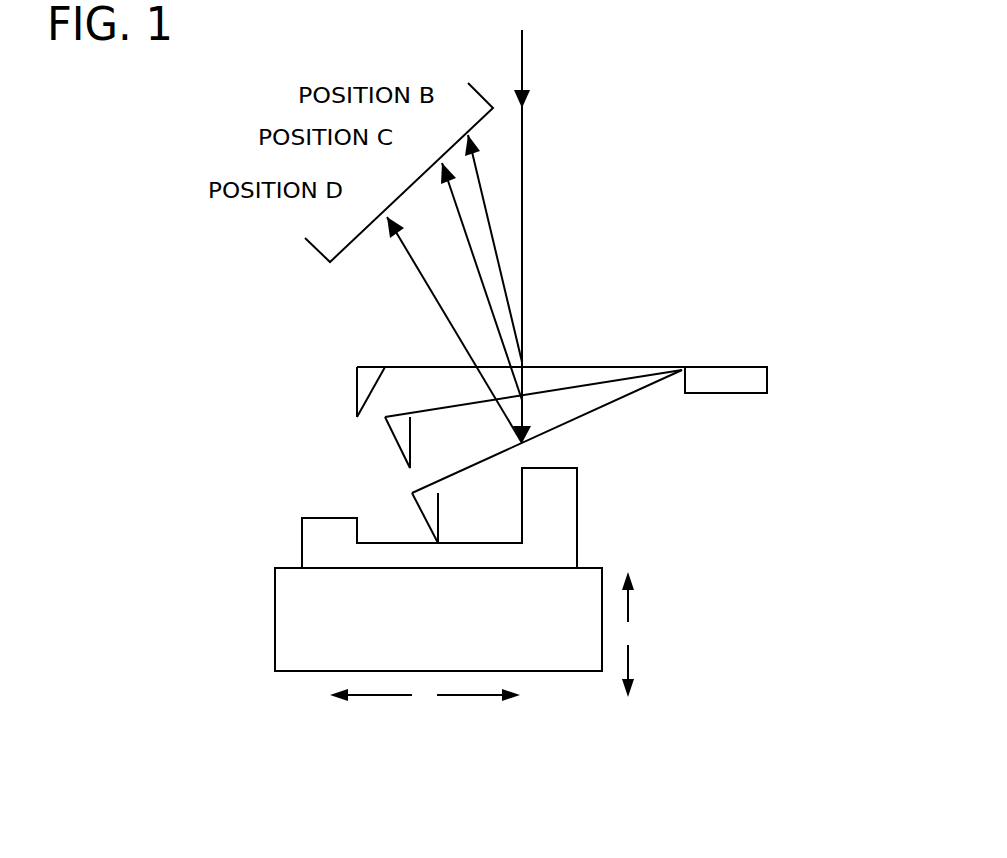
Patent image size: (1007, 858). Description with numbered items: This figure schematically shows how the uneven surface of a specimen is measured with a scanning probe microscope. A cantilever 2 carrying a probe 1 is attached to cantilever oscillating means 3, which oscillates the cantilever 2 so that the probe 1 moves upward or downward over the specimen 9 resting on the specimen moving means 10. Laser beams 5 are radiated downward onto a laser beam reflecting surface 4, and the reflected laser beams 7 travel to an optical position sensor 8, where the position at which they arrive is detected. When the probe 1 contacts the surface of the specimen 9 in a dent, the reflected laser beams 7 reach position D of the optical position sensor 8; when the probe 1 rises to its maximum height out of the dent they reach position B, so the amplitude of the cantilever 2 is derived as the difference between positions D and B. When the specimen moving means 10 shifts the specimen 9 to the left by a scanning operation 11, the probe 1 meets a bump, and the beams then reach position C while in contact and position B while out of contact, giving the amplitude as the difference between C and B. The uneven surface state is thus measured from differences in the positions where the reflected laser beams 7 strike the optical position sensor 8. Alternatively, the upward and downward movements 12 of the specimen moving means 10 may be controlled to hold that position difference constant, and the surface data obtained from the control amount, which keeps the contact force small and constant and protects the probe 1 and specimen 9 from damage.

The probe 1 is at (357, 403).
The cantilever 2 is at (347, 363).
The cantilever oscillating means 3 is at (742, 397).
The laser beam reflecting surface 4 is at (403, 360).
The laser beam 5 is at (528, 148).
The reflected laser beams 7 is at (400, 253).
The optical position sensor 8 is at (472, 87).
The specimen 9 is at (578, 505).
The specimen moving means 10 is at (603, 582).
The scanning operation 11 is at (430, 700).
The upward and downward movements 12 is at (632, 630).